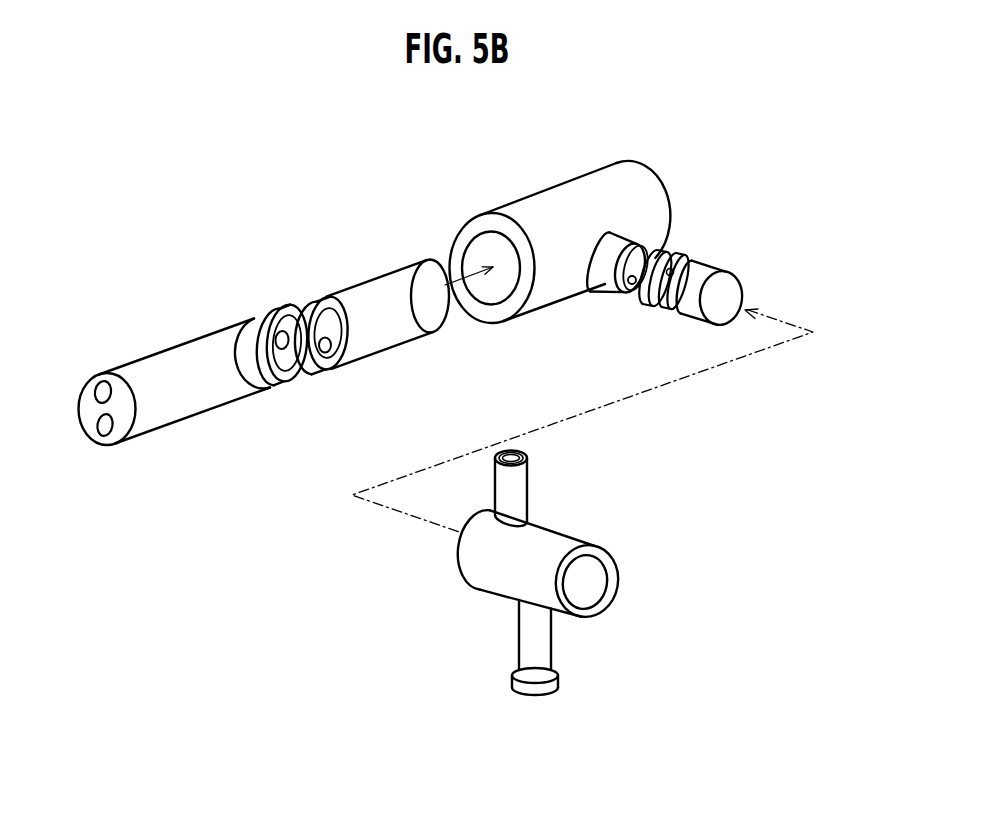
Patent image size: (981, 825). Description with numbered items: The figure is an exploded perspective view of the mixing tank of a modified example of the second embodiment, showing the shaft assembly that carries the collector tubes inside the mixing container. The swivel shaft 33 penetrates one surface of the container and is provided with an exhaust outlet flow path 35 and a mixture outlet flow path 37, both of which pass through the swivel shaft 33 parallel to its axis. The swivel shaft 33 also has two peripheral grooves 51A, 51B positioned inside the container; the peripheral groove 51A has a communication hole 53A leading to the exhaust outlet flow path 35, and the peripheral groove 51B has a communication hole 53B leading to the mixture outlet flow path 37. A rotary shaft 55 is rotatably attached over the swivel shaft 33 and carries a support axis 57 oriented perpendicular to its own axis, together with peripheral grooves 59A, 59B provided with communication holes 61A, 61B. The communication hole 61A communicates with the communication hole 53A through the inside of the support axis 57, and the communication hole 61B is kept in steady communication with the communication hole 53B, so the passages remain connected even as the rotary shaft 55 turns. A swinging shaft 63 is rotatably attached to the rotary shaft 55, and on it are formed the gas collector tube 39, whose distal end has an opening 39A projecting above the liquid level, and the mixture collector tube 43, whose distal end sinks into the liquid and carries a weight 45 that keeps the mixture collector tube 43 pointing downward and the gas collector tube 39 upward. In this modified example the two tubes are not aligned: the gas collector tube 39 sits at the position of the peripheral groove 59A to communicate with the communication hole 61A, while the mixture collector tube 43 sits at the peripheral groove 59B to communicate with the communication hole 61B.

The swivel shaft 33 is at (190, 350).
The exhaust outlet flow path 35 is at (100, 386).
The mixture outlet flow path 37 is at (100, 423).
The peripheral groove 51A is at (270, 328).
The peripheral groove 51B is at (312, 313).
The communication hole 53A is at (287, 353).
The communication hole 53B is at (333, 350).
The rotary shaft 55 is at (562, 195).
The support axis 57 is at (705, 273).
The peripheral groove 59A is at (640, 254).
The peripheral groove 59B is at (660, 300).
The communication hole 61A is at (623, 282).
The communication hole 61B is at (684, 262).
The gas collector tube 39 is at (520, 490).
The opening 39A is at (520, 449).
The mixture collector tube 43 is at (518, 632).
The weight 45 is at (558, 682).
The swinging shaft 63 is at (567, 538).